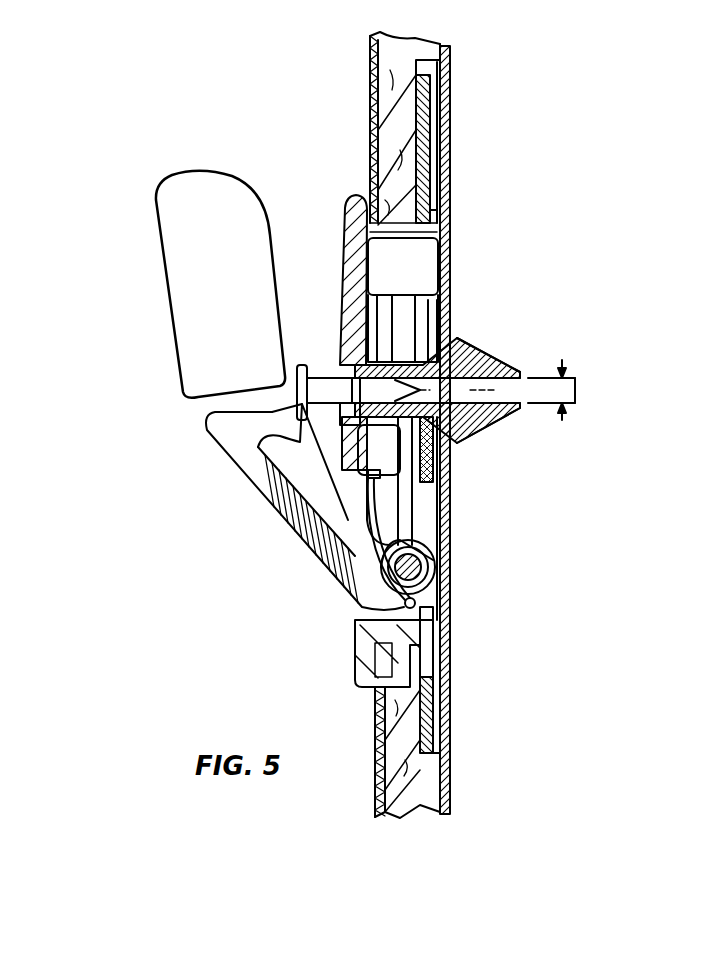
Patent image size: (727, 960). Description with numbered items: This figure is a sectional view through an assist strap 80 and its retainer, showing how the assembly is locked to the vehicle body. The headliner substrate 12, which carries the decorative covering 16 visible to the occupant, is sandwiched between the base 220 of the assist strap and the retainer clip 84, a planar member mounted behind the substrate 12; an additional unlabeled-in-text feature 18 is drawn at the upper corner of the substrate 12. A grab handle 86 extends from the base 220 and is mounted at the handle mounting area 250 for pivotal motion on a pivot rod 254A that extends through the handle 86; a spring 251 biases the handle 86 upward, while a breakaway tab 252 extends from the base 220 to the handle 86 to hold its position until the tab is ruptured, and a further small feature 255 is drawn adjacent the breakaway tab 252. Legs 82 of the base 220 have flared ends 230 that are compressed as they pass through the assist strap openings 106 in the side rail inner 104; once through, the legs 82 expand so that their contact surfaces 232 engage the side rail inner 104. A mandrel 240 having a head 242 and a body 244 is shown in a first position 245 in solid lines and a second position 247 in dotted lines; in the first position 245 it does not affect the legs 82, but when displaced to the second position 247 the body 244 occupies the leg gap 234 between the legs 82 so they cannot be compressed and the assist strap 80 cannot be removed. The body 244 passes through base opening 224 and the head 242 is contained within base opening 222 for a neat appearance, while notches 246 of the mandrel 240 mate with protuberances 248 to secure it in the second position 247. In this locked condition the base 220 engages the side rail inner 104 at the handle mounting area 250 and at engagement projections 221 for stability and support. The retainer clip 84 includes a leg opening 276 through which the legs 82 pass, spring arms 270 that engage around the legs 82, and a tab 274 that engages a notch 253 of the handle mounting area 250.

The substrate 12 is at (400, 40).
The decorative covering 16 is at (372, 48).
The frame corner 18 is at (438, 60).
The assist strap 80 is at (135, 448).
The legs 82 is at (462, 352).
The retainer clip 84 is at (440, 728).
The grab handle 86 is at (244, 275).
The side rail inner 104 is at (452, 160).
The assist strap openings 106 is at (452, 468).
The base 220 is at (345, 206).
The engagement projections 221 is at (430, 281).
The base opening 222 is at (332, 417).
The base opening 224 is at (385, 481).
The flared end 230 is at (506, 362).
The contact surfaces 232 is at (437, 333).
The leg gap 234 is at (572, 392).
The mandrel 240 is at (305, 507).
The head 242 is at (292, 362).
The body 244 is at (330, 365).
The first position 245 is at (429, 390).
The notches 246 is at (320, 366).
The second position 247 is at (476, 389).
The protuberances 248 is at (303, 462).
The handle mounting area 250 is at (363, 609).
The spring 251 is at (386, 562).
The breakaway tab 252 is at (432, 568).
The notch 253 is at (420, 637).
The pivot rod 254A is at (398, 592).
The stop pin 255 is at (432, 588).
The spring arms 270 is at (443, 304).
The tab 274 is at (428, 612).
The leg opening 276 is at (433, 215).